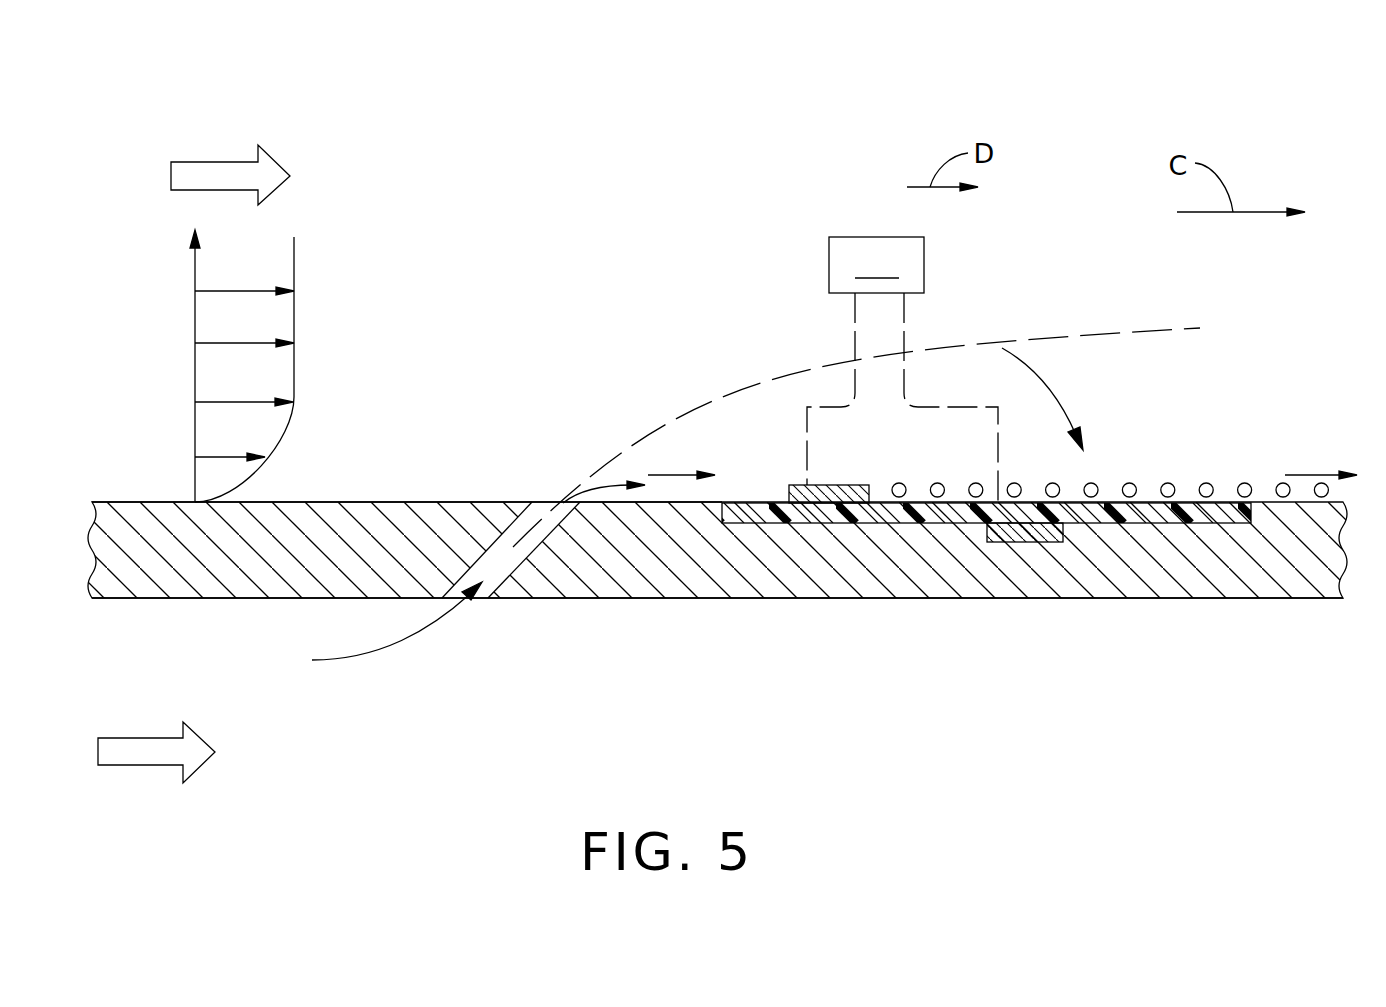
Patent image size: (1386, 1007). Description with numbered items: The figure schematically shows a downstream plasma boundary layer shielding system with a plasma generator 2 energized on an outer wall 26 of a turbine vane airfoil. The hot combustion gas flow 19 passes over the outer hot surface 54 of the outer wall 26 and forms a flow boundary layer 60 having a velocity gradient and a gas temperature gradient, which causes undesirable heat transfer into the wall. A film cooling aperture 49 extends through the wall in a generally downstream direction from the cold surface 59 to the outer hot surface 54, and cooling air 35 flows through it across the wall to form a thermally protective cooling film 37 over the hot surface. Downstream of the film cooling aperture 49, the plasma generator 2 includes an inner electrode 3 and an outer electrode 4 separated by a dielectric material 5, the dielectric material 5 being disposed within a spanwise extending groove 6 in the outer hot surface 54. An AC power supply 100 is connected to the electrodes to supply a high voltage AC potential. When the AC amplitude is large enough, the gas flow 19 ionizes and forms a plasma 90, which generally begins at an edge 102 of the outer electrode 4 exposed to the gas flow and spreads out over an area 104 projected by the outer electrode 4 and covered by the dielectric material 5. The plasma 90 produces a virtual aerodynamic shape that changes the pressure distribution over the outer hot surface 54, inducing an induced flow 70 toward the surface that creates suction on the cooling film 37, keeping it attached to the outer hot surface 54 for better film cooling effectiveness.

The plasma generator 2 is at (832, 465).
The inner electrode 3 is at (1025, 542).
The outer electrode 4 is at (815, 485).
The dielectric material 5 is at (860, 523).
The spanwise extending groove 6 is at (733, 503).
The hot combustion gas flow 19 is at (215, 161).
The outer wall 26 is at (90, 550).
The cooling air 35 is at (133, 738).
The cooling film 37 is at (728, 397).
The film cooling aperture 49 is at (507, 562).
The outer hot surface 54 is at (158, 502).
The cold surface 59 is at (197, 598).
The flow boundary layer 60 is at (283, 443).
The induced flow 70 is at (1040, 378).
The plasma 90 is at (1280, 484).
The AC power supply 100 is at (876, 265).
The edge of the outer electrode 102 is at (870, 500).
The area projected by the outer electrode 104 is at (1153, 503).